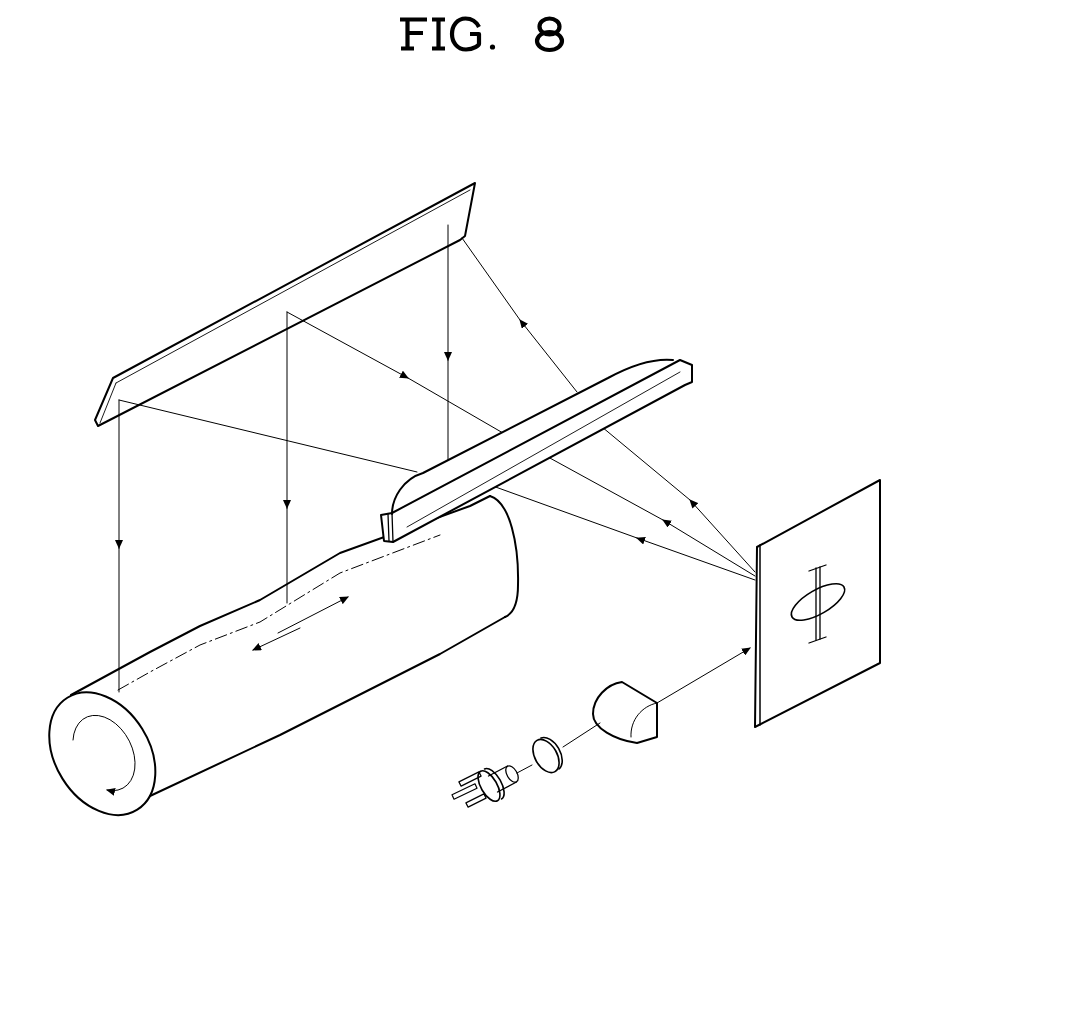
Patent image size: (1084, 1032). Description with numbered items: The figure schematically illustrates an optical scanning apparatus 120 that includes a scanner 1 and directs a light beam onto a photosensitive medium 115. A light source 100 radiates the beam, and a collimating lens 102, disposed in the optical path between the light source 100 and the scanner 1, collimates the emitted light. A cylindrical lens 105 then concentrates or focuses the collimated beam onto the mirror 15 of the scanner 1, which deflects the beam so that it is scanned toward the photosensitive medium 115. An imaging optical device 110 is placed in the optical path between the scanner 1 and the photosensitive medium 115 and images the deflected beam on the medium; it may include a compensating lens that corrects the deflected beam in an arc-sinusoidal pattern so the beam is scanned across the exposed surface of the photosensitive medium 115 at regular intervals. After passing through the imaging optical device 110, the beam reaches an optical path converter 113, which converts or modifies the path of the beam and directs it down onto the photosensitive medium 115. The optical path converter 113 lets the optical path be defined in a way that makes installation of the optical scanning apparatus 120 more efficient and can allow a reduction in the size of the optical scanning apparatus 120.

The scanner 1 is at (895, 467).
The mirror 15 is at (837, 597).
The light source 100 is at (500, 803).
The collimating lens 102 is at (563, 773).
The cylindrical lens 105 is at (648, 742).
The imaging optical device 110 is at (694, 381).
The optical path converter 113 is at (479, 179).
The photosensitive medium 115 is at (291, 723).
The optical scanning apparatus 120 is at (738, 294).